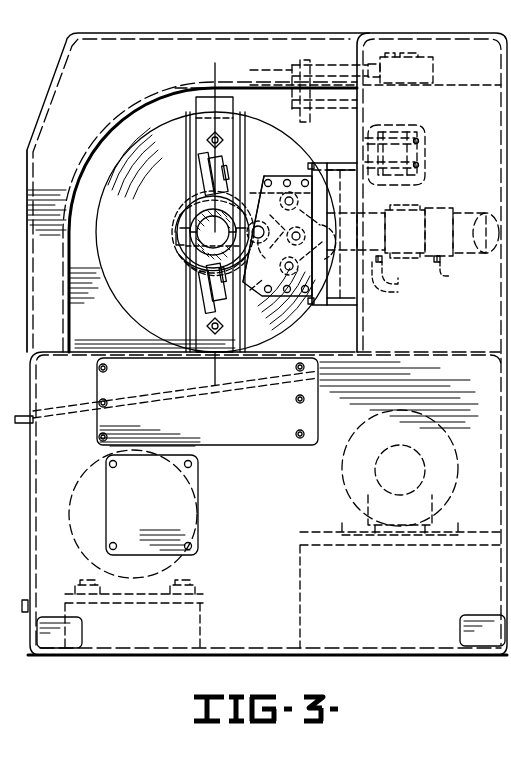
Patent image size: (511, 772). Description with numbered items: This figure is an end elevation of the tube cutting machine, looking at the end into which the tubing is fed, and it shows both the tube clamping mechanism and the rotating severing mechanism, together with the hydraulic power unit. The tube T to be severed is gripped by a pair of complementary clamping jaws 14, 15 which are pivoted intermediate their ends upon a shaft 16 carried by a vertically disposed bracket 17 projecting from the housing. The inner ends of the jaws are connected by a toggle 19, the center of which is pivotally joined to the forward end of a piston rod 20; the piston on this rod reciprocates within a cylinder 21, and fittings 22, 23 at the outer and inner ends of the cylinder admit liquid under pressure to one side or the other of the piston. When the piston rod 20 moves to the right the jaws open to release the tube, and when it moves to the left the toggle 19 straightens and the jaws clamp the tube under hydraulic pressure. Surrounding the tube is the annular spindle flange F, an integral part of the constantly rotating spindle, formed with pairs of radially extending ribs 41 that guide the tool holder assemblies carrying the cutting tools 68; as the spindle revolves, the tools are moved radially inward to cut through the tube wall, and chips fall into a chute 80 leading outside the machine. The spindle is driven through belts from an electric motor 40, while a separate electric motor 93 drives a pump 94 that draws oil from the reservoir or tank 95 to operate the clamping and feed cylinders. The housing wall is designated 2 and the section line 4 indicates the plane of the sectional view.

The housing wall 2 is at (35, 290).
The section line 4- 4 is at (213, 70).
The clamping jaw 14 is at (196, 222).
The clamping jaw 15 is at (200, 268).
The shaft 16 is at (271, 229).
The bracket 17 is at (280, 182).
The toggle 19 is at (312, 190).
The piston rod 20 is at (315, 246).
The cylinder 21 is at (392, 212).
The fitting 22 is at (450, 275).
The fitting 23 is at (398, 282).
The electric motor 40 is at (197, 487).
The radially extending rib 41 is at (188, 286).
The cutting tool 68 is at (205, 212).
The chute 80 is at (143, 400).
The electric motor 93 is at (345, 478).
The pump 94 is at (376, 461).
The oil reservoir or tank 95 is at (462, 640).
The annular spindle flange F is at (132, 307).
The tube T is at (188, 252).